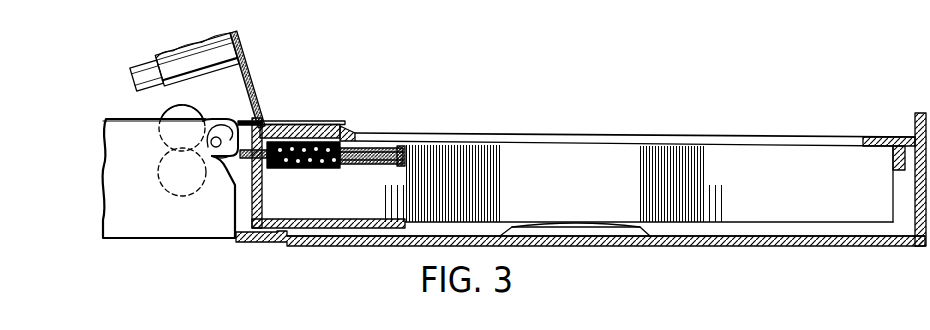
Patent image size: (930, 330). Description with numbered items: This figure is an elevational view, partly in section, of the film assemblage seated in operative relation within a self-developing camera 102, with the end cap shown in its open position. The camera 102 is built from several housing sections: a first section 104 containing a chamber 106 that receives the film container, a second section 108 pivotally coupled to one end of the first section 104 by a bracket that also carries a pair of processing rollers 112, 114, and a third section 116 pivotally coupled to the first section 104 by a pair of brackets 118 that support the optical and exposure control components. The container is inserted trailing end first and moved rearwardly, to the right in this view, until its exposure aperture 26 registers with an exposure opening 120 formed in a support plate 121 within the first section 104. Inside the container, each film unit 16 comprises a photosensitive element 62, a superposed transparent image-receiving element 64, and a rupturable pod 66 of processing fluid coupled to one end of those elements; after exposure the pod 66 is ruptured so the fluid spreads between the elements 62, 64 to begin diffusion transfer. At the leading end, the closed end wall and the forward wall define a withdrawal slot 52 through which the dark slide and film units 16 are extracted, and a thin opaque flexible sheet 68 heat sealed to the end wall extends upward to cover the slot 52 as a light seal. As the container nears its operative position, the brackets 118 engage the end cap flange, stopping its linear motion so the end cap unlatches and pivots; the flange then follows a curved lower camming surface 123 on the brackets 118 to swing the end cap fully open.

The film unit 16 is at (353, 167).
The exposure aperture 26 is at (393, 133).
The withdrawal slot 52 is at (266, 125).
The photosensitive element 62 is at (401, 167).
The transparent image-receiving element 64 is at (386, 164).
The rupturable pod 66 is at (312, 168).
The flexible sheet 68 is at (238, 126).
The self-developing camera 102 is at (658, 248).
The first section 104 is at (772, 246).
The chamber 106 is at (880, 237).
The second section 108 is at (190, 228).
The processing roller 112 is at (158, 132).
The processing roller 114 is at (158, 179).
The third section 116 is at (230, 50).
The bracket 118 is at (206, 140).
The exposure opening 120 is at (332, 126).
The support plate 121 is at (310, 121).
The curved lower camming surface 123 is at (221, 160).